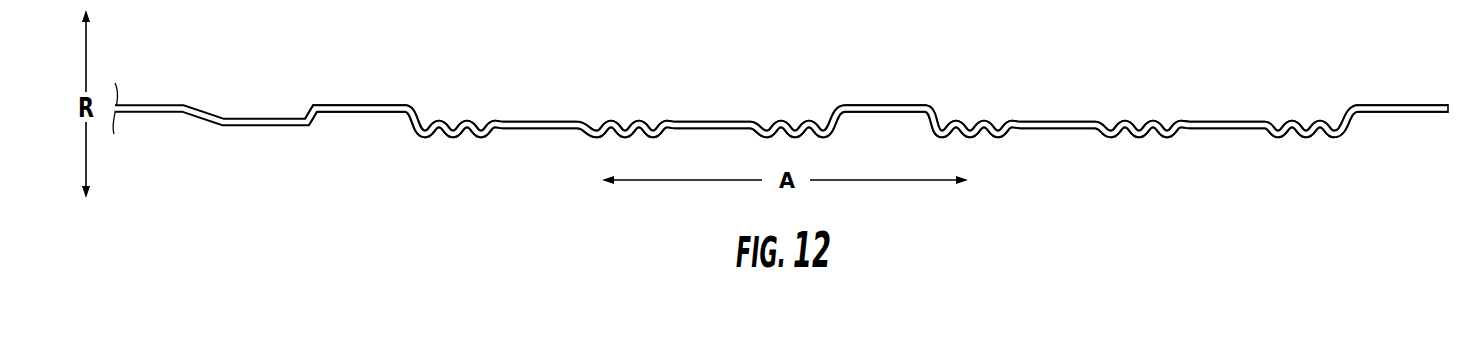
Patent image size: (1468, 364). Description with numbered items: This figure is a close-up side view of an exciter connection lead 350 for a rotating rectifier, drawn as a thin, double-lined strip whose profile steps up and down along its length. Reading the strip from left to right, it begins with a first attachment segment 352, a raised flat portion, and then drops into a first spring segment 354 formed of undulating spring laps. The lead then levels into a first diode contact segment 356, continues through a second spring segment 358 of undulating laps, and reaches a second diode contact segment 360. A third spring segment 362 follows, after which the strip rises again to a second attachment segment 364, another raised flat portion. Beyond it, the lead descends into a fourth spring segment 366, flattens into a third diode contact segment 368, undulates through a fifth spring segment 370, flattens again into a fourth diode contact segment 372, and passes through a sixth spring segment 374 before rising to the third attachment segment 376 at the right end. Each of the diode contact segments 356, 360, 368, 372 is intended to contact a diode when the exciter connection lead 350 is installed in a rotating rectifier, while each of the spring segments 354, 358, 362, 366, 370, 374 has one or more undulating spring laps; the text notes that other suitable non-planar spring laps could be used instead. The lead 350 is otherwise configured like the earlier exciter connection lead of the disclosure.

The exciter connection lead 350 is at (258, 95).
The first attachment segment 352 is at (382, 104).
The first spring segment 354 is at (472, 120).
The first diode contact segment 356 is at (563, 120).
The second spring segment 358 is at (647, 120).
The second diode contact segment 360 is at (738, 120).
The third spring segment 362 is at (817, 120).
The second attachment segment 364 is at (917, 104).
The fourth spring segment 366 is at (998, 120).
The third diode contact segment 368 is at (1083, 120).
The fifth spring segment 370 is at (1160, 120).
The fourth diode contact segment 372 is at (1248, 120).
The sixth spring segment 374 is at (1333, 120).
The third attachment segment 376 is at (1428, 104).